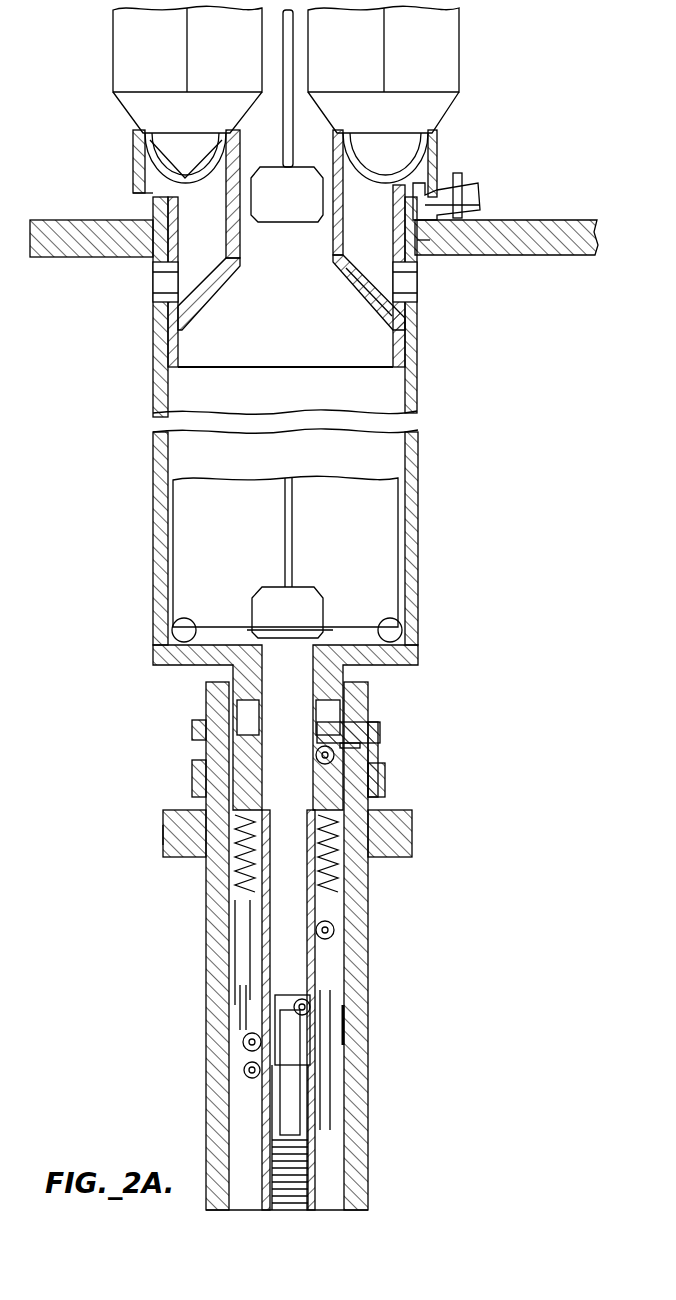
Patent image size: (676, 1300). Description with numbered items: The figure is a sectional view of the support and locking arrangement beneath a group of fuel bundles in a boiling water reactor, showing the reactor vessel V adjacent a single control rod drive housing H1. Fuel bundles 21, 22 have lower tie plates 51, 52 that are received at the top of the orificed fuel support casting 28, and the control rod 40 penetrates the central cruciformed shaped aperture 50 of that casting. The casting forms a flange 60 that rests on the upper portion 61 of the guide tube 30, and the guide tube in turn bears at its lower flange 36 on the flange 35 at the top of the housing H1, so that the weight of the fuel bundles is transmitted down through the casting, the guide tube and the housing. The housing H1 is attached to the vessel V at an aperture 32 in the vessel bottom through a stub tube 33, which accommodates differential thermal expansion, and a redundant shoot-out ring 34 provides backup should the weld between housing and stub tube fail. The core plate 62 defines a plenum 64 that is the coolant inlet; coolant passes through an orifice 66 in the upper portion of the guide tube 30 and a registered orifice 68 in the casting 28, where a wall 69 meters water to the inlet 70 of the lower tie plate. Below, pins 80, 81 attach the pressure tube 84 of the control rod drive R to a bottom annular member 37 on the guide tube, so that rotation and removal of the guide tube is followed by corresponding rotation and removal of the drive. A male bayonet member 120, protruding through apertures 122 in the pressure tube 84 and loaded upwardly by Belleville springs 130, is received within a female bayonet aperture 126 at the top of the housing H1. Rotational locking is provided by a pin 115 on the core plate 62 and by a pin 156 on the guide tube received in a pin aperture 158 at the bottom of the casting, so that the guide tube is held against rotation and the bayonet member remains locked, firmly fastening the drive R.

The fuel bundle 21 is at (459, 62).
The fuel bundle 22 is at (118, 98).
The orificed fuel support casting 28 is at (302, 339).
The guide tube 30 is at (418, 415).
The aperture 32 is at (412, 836).
The stub tube 33 is at (386, 778).
The redundant shoot-out ring 34 is at (366, 720).
The flange 35 is at (212, 678).
The lower flange 36 is at (358, 675).
The bottom annular member 37 is at (238, 714).
The control rod 40 is at (270, 224).
The central cruciformed shaped aperture 50 is at (322, 157).
The lower tie plate 51 is at (448, 112).
The lower tie plate 52 is at (133, 130).
The flange 60 is at (153, 197).
The upper portion 61 is at (153, 264).
The core plate 62 is at (555, 257).
The plenum 64 is at (557, 496).
The orifice 66 is at (410, 292).
The registered orifice 68 is at (364, 300).
The wall 69 is at (206, 290).
The inlet 70 is at (152, 176).
The pin 80 is at (236, 704).
The pin 81 is at (348, 700).
The pressure tube 84 is at (236, 1004).
The pin 115 is at (468, 203).
The male bayonet member 120 is at (380, 730).
The aperture 122 is at (382, 741).
The female bayonet aperture 126 is at (352, 680).
The Belleville springs 130 is at (240, 858).
The pin 156 is at (432, 185).
The pin aperture 158 is at (447, 257).
The reactor vessel V is at (165, 840).
The control rod drive housing H1 is at (210, 942).
The control rod drive R is at (350, 1018).